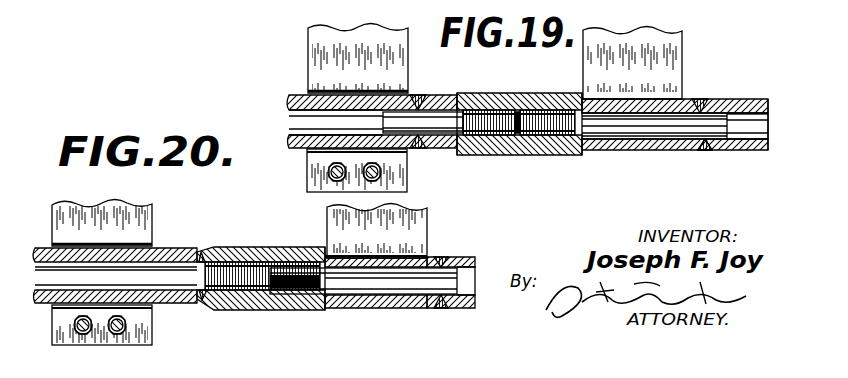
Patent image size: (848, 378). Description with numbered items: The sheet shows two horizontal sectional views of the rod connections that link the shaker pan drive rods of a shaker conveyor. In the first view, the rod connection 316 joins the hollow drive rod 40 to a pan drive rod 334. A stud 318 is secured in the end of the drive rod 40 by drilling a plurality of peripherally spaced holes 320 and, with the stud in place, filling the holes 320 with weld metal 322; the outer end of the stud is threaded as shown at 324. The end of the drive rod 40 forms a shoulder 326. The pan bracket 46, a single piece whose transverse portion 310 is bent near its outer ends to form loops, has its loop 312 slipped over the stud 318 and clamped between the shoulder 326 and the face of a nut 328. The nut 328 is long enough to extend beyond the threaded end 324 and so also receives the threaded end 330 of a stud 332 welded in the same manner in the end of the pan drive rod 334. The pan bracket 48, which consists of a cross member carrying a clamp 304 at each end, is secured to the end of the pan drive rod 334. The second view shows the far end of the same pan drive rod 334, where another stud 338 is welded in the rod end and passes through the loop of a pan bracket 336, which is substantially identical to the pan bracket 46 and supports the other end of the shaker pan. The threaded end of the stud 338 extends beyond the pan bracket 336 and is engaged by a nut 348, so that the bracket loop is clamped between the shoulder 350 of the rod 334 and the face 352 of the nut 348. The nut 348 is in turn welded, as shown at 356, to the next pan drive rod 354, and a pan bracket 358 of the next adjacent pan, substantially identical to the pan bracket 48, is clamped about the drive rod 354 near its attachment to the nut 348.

In FIG. 19, the drive rod 40 is at (758, 100).
In FIG. 19, the pan bracket 46 is at (665, 31).
In FIG. 19, the pan bracket 48 is at (428, 4).
In FIG. 19, the clamp 304 is at (322, 166).
In FIG. 19, the transverse portion 310 is at (678, 52).
In FIG. 19, the loop 312 is at (621, 151).
In FIG. 19, the rod connection 316 is at (527, 155).
In FIG. 19, the stud 318 is at (733, 117).
In FIG. 19, the holes 320 is at (700, 98).
In FIG. 19, the weld metal 322 is at (703, 151).
In FIG. 19, the threaded end 324 is at (547, 110).
In FIG. 19, the shoulder 326 is at (680, 105).
In FIG. 19, the nut 328 is at (497, 93).
In FIG. 19, the threaded end 330 is at (472, 114).
In FIG. 19, the stud 332 is at (440, 127).
In FIG. 19, the pan drive rod 334 is at (300, 96).
In FIG. 20, the pan drive rod 334 is at (465, 308).
In FIG. 20, the pan bracket 336 is at (410, 236).
In FIG. 20, the stud 338 is at (363, 283).
In FIG. 20, the nut 348 is at (249, 247).
In FIG. 20, the shoulder 350 is at (420, 259).
In FIG. 20, the face 352 is at (323, 252).
In FIG. 20, the pan drive rod 354 is at (186, 242).
In FIG. 20, the weld 356 is at (204, 302).
In FIG. 20, the pan bracket 358 is at (143, 210).